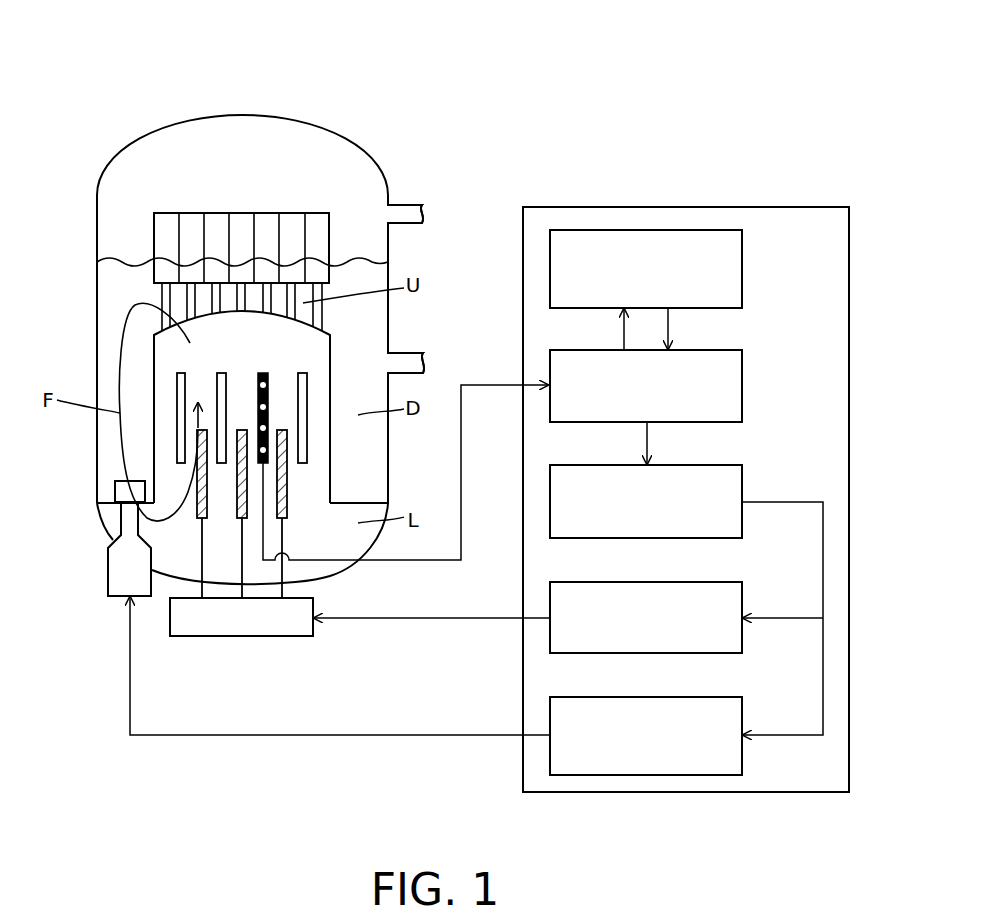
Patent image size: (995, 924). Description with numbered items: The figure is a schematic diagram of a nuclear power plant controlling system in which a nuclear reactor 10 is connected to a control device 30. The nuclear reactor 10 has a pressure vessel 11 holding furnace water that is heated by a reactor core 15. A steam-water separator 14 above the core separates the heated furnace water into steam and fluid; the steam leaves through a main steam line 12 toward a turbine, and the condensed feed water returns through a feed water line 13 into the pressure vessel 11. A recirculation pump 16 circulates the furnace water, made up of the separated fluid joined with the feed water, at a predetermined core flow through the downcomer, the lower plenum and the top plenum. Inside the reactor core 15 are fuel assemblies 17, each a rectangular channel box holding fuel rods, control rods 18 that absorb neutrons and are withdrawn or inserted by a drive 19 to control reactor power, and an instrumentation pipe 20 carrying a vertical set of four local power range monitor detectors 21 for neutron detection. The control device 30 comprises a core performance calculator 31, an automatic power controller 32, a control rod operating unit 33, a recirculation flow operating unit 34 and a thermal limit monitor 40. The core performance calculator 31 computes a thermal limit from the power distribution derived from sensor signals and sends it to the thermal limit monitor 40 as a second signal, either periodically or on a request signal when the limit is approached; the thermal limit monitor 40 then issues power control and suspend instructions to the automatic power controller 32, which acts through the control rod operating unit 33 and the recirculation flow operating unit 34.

The nuclear reactor 10 is at (152, 86).
The pressure vessel 11 is at (105, 168).
The main steam line 12 is at (407, 201).
The feed water line 13 is at (396, 353).
The steam-water separator 14 is at (153, 247).
The reactor core 15 is at (153, 383).
The recirculation pump 16 is at (108, 568).
The fuel assembly 17 is at (178, 373).
The control rod 18 is at (250, 493).
The drive 19 is at (314, 602).
The instrumentation pipe 20 is at (262, 373).
The LPRM detector 21 is at (268, 407).
The control device 30 is at (612, 207).
The core performance calculator 31 is at (742, 250).
The automatic power controller 32 is at (742, 488).
The control rod operating unit 33 is at (742, 605).
The recirculation flow operating unit 34 is at (742, 720).
The thermal limit monitor 40 is at (742, 372).